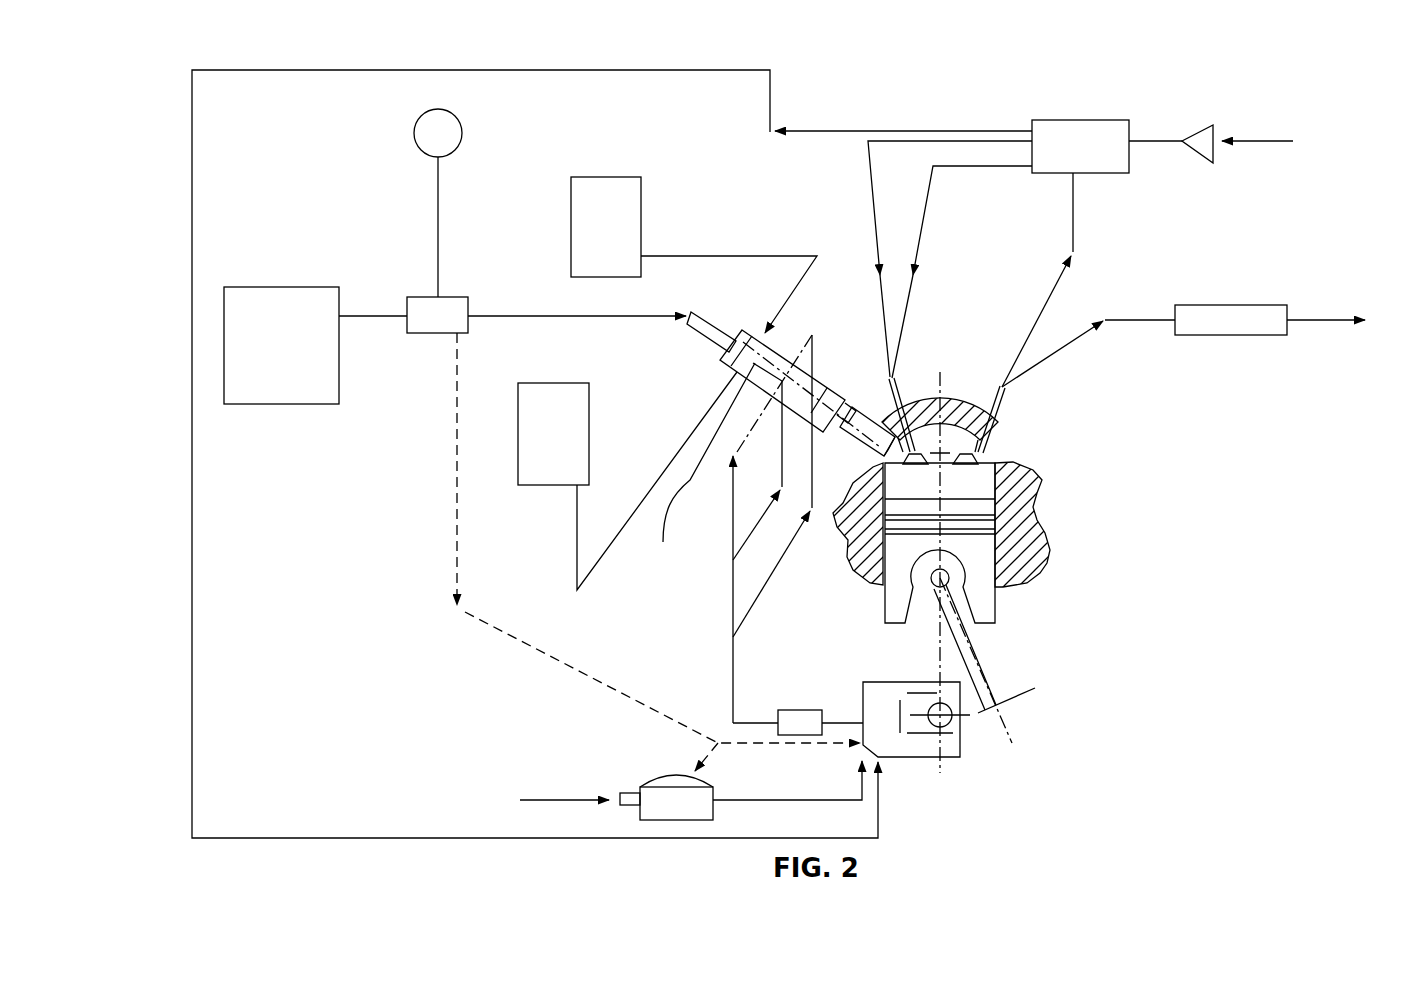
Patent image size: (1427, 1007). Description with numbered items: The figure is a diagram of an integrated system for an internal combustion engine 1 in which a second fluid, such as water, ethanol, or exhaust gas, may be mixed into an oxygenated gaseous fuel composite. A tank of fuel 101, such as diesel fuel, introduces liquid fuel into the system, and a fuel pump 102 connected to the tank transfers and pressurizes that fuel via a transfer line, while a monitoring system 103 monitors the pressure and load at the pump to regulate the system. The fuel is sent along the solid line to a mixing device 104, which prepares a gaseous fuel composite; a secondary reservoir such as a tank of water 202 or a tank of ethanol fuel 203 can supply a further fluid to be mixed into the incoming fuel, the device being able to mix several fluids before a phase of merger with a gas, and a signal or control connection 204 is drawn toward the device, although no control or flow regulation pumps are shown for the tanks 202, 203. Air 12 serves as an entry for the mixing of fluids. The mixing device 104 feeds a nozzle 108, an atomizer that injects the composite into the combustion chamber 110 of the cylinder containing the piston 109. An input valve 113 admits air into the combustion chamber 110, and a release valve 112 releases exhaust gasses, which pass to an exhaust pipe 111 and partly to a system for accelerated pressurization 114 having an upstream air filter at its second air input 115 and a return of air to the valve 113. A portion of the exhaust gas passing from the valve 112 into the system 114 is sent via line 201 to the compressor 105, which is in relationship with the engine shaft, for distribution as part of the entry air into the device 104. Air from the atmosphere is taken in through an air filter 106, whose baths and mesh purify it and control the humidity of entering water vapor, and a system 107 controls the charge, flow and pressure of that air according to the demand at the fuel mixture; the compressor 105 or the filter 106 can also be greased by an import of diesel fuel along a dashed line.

The internal combustion engine 1 is at (875, 72).
The air 12 is at (733, 598).
The tank of fuel 101 is at (266, 300).
The fuel pump 102 is at (453, 328).
The monitoring system 103 is at (447, 132).
The mixing device 104 is at (775, 345).
The compressor 105 is at (915, 748).
The air filter 106 is at (697, 805).
The air control system 107 is at (785, 725).
The nozzle 108 is at (850, 425).
The piston 109 is at (980, 555).
The combustion chamber 110 is at (977, 467).
The exhaust pipe 111 is at (1210, 313).
The release valve 112 is at (990, 405).
The input valve 113 is at (892, 380).
The system for accelerated pressurization 114 is at (1069, 133).
The air intake 115 is at (1201, 138).
The line 201 is at (565, 70).
The tank of water 202 is at (613, 190).
The tank of ethanol fuel 203 is at (557, 470).
The signal line 204 is at (700, 467).